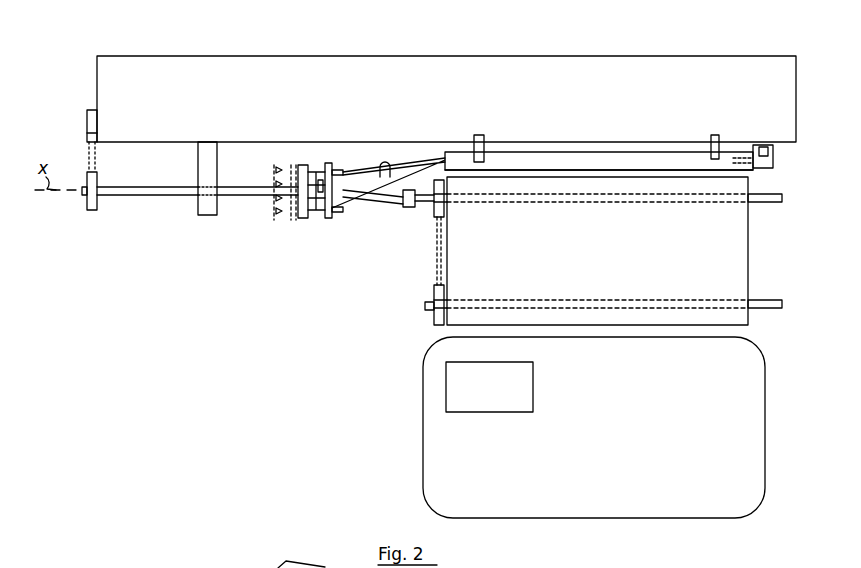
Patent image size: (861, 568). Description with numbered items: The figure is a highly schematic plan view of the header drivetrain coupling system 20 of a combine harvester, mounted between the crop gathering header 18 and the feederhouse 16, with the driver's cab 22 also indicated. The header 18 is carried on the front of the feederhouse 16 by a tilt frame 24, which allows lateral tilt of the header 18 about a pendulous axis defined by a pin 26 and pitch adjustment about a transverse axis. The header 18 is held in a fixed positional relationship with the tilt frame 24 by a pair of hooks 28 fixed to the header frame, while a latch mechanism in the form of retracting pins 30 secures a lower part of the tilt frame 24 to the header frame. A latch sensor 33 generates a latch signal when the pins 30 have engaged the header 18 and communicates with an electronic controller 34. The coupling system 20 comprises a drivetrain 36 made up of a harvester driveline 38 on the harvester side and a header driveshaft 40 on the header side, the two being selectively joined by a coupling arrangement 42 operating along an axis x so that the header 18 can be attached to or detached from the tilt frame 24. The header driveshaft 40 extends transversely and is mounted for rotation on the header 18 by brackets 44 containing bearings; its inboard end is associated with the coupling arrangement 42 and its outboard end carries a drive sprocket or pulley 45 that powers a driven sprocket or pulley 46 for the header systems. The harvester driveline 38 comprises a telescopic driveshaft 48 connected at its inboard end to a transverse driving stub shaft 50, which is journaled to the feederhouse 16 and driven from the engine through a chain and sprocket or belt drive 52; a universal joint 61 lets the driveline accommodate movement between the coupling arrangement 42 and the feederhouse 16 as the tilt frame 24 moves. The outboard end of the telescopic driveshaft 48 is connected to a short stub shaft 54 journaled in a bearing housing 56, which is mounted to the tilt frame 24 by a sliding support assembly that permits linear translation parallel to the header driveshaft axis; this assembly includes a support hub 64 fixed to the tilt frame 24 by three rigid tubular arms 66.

The feederhouse 16 is at (742, 248).
The crop gathering header 18 is at (393, 66).
The header drivetrain coupling system 20 is at (310, 238).
The driver's cab 22 is at (765, 393).
The tilt frame 24 is at (657, 160).
The pin 26 is at (606, 166).
The hooks 28 is at (483, 140).
The retracting pins 30 is at (757, 168).
The latch sensor 33 is at (770, 147).
The electronic controller 34 is at (467, 390).
The drivetrain 36 is at (242, 197).
The harvester driveline 38 is at (385, 209).
The header driveshaft 40 is at (153, 197).
The coupling arrangement 42 is at (280, 224).
The brackets 44 is at (198, 167).
The drive sprocket or pulley 45 is at (89, 212).
The driven sprocket or pulley 46 is at (88, 118).
The telescopic driveshaft 48 is at (372, 207).
The transverse driving stub shaft 50 is at (423, 205).
The chain and sprocket or belt drive 52 is at (436, 270).
The short stub shaft 54 is at (311, 220).
The bearing housing 56 is at (303, 220).
The universal joint 61 is at (407, 208).
The support hub 64 is at (333, 170).
The rigid tubular arms 66 is at (384, 159).